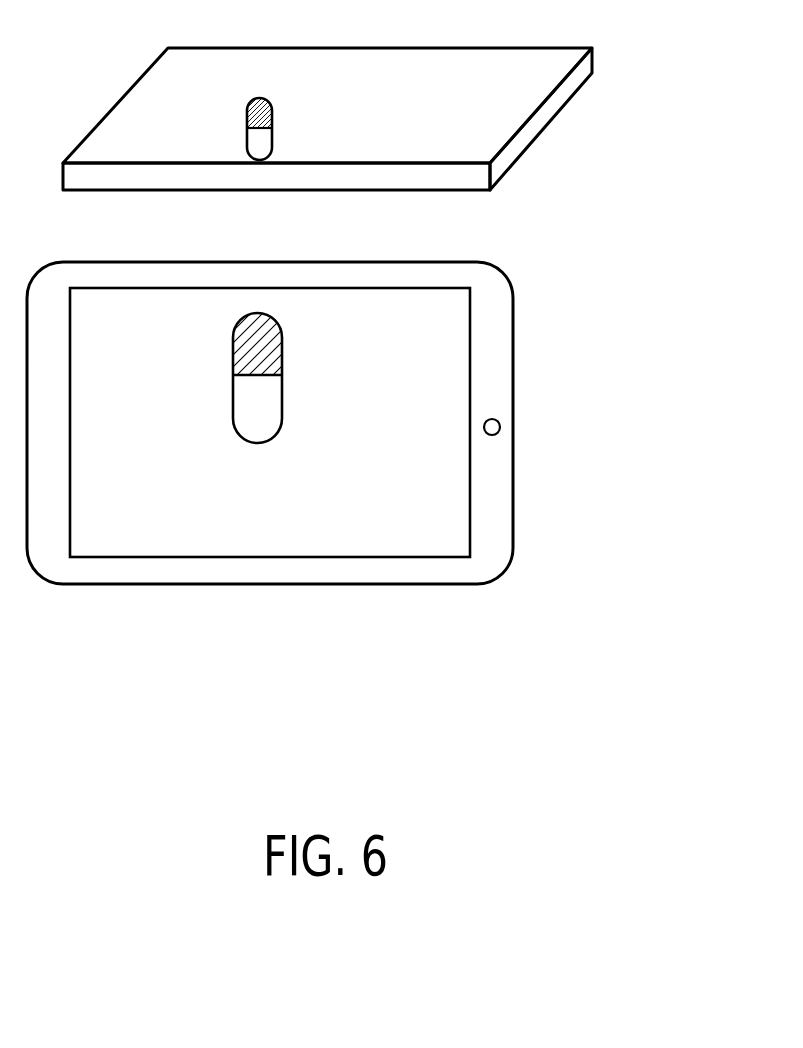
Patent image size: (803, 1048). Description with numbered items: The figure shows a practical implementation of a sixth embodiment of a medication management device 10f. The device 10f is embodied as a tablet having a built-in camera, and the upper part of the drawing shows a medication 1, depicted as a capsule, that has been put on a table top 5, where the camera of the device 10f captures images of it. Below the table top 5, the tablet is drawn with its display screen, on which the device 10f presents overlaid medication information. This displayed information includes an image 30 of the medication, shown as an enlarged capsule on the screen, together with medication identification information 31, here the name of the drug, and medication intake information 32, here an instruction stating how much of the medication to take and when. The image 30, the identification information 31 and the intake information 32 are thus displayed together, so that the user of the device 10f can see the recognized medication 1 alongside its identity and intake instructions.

The medication 1 is at (252, 115).
The table top 5 is at (548, 115).
The medication management device 10f is at (575, 318).
The image of the medication 30 is at (275, 400).
The medication identification information 31 is at (320, 487).
The medication intake information 32 is at (345, 520).